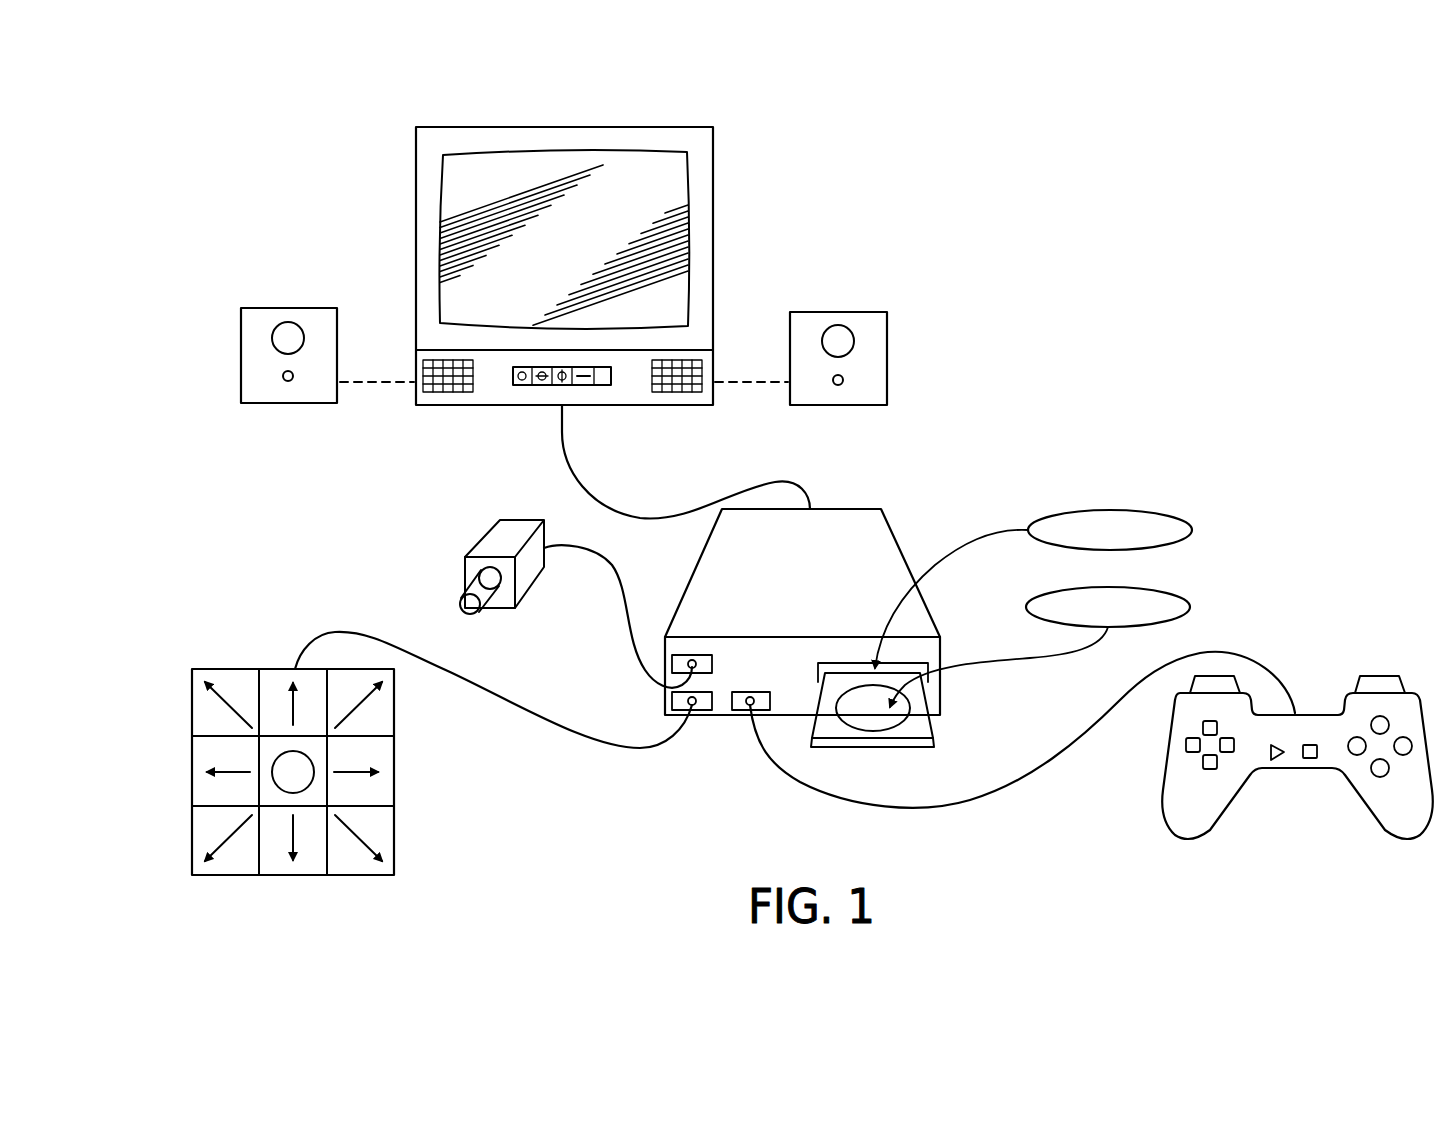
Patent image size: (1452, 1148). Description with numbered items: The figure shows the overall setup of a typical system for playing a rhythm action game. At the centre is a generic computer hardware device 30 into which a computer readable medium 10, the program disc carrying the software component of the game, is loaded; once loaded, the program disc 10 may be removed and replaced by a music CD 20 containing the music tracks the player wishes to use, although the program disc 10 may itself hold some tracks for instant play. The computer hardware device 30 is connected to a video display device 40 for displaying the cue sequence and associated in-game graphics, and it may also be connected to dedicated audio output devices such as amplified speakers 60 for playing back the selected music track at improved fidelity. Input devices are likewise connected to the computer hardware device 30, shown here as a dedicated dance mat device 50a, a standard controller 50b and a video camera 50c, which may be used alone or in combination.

The computer readable medium 10 is at (1122, 620).
The music CD 20 is at (1123, 543).
The computer hardware device 30 is at (820, 580).
The video display device 40 is at (713, 135).
The dance mat device 50a is at (192, 669).
The standard controller 50b is at (1205, 822).
The video camera 50c is at (465, 557).
The amplified speakers 60 is at (337, 308).